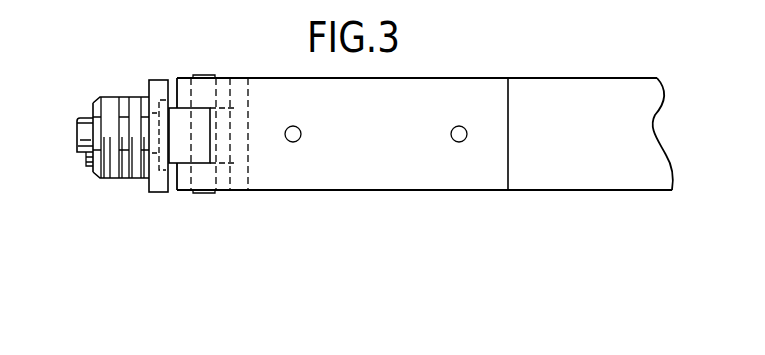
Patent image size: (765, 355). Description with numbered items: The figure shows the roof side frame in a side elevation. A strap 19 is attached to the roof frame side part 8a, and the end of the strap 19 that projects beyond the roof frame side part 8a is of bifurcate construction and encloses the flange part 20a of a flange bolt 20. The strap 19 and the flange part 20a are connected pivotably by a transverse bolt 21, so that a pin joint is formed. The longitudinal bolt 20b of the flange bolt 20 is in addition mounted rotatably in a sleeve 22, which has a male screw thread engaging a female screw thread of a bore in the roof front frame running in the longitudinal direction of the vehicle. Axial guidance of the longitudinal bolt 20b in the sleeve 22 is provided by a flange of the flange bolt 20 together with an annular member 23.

The roof frame side part 8a is at (621, 168).
The strap 19 is at (408, 173).
The flange bolt 20 is at (74, 137).
The flange part 20a is at (180, 153).
The longitudinal bolt 20b is at (91, 118).
The transverse bolt 21 is at (212, 186).
The sleeve 22 is at (112, 177).
The annular member 23 is at (86, 165).